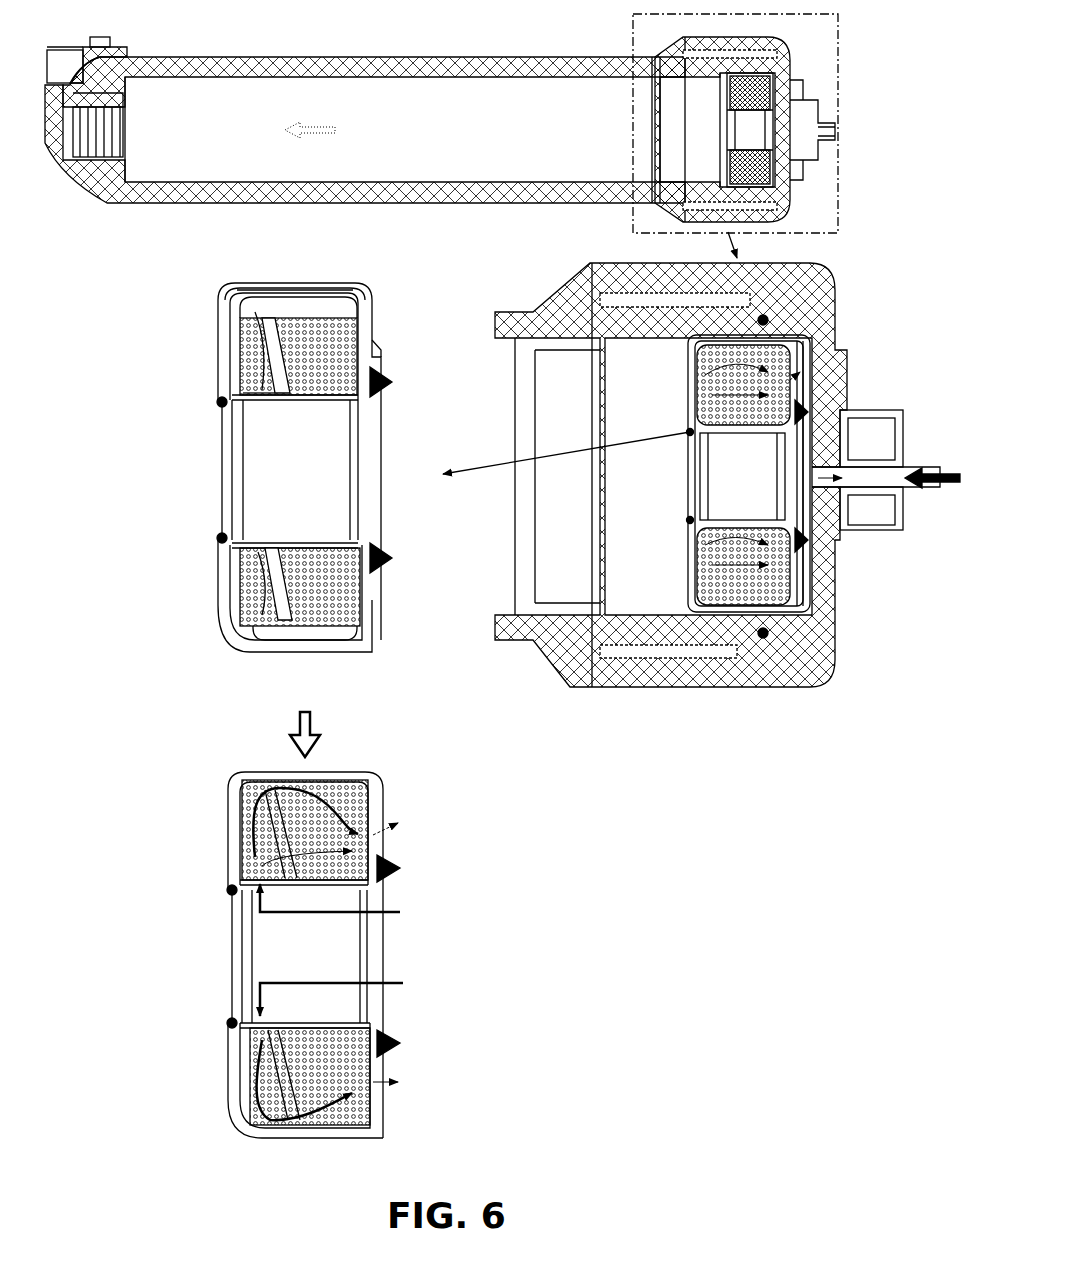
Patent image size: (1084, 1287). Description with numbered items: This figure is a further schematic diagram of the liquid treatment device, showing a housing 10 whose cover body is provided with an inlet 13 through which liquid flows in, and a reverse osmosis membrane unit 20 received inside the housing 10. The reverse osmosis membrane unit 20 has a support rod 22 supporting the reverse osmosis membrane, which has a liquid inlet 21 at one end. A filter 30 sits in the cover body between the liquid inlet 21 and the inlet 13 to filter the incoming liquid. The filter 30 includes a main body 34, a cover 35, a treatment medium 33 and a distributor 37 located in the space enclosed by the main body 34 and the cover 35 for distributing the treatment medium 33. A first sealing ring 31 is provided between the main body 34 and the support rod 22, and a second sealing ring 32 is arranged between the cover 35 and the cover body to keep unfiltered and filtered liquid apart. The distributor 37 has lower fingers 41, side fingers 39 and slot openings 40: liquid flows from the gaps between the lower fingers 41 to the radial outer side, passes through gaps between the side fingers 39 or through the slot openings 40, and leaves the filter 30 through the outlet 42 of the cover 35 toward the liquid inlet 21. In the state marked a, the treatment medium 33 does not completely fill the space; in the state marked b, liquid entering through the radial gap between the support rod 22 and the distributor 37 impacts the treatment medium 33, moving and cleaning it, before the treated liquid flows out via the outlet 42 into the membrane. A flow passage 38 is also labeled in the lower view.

The housing 10 is at (320, 53).
The reverse osmosis membrane unit 20 is at (434, 93).
The inlet 13 is at (929, 458).
The support rod 22 is at (770, 478).
The liquid inlet 21 is at (690, 563).
The filter 30 is at (385, 636).
The first sealing ring 31 is at (218, 534).
The second sealing ring 32 is at (382, 558).
The treatment medium 33 is at (303, 625).
The main body 34 is at (328, 286).
The cover 35 is at (366, 292).
The distributor 37 is at (262, 623).
The flow passage 38 is at (250, 1050).
The side fingers 39 is at (320, 305).
The slot openings 40 is at (262, 343).
The lower fingers 41 is at (262, 396).
The outlet 42 is at (364, 347).